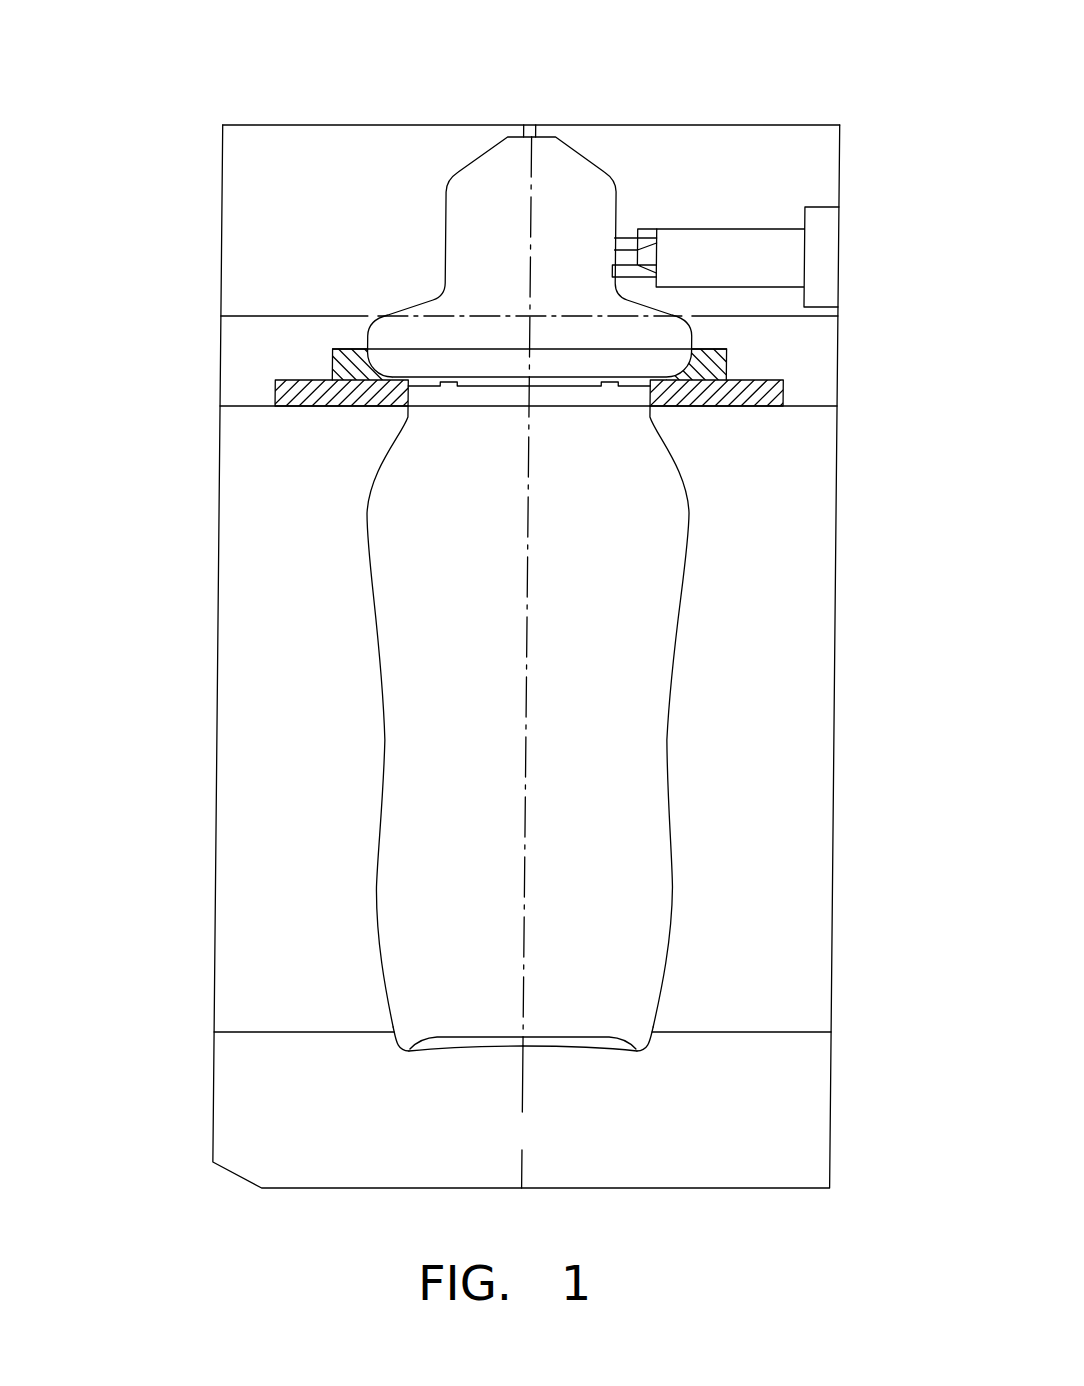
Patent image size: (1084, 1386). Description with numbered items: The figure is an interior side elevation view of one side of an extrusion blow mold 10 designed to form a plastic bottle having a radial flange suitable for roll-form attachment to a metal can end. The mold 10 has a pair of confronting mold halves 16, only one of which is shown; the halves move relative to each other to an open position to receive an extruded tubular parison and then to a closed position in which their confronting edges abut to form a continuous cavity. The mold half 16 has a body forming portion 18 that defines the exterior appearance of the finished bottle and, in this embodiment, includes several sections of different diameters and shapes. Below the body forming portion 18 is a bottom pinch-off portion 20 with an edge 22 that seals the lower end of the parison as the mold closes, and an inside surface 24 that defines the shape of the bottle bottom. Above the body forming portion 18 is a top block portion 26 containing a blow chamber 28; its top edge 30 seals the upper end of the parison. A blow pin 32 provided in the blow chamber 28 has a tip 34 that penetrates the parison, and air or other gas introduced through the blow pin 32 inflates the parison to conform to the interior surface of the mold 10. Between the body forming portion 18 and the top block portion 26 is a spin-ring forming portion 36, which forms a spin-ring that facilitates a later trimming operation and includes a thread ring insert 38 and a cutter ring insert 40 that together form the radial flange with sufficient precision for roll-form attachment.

The extrusion blow mold 10 is at (220, 1194).
The mold half 16 is at (642, 104).
The body forming portion 18 is at (812, 598).
The bottom pinch-off portion 20 is at (680, 1160).
The edge 22 is at (489, 1052).
The inside surface 24 is at (421, 1040).
The top block portion 26 is at (785, 140).
The blow chamber 28 is at (560, 160).
The top edge 30 is at (522, 133).
The blow pin 32 is at (736, 277).
The tip 34 is at (627, 255).
The spin-ring forming portion 36 is at (249, 355).
The thread ring insert 38 is at (315, 408).
The cutter ring insert 40 is at (355, 348).